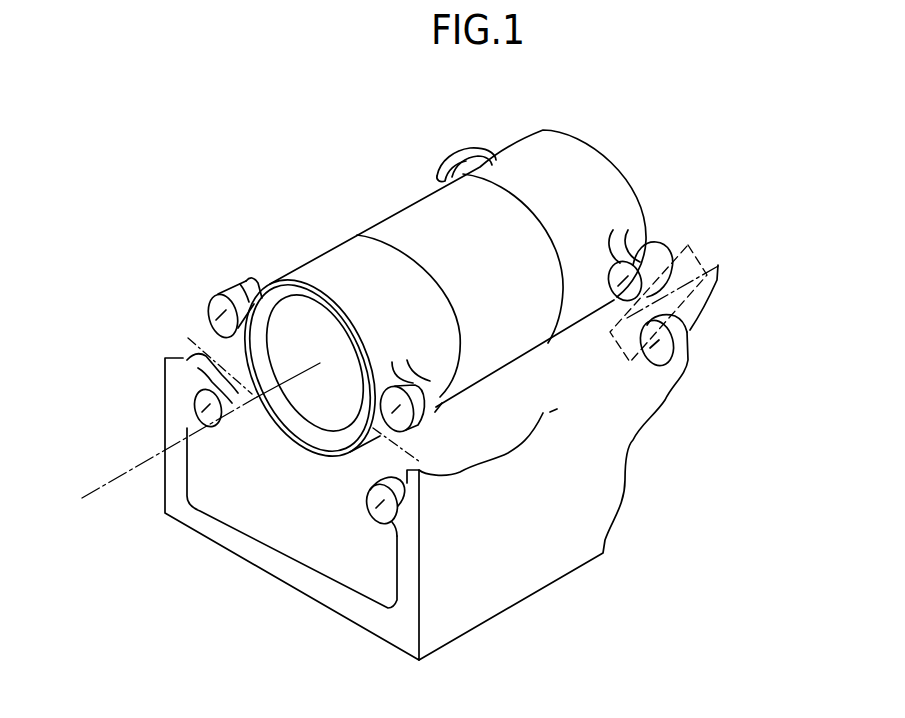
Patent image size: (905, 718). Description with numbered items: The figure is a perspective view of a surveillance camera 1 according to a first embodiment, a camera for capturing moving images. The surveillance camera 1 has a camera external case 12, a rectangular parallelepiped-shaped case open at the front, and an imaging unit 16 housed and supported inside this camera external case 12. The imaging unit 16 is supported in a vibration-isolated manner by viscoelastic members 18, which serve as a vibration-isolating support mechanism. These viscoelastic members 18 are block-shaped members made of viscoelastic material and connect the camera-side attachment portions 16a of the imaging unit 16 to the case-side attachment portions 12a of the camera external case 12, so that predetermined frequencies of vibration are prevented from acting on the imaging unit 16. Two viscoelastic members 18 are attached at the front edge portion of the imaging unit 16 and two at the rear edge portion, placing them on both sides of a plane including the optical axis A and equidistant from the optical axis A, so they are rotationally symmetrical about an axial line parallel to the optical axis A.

The surveillance camera 1 is at (128, 253).
The camera external case 12 is at (542, 542).
The case-side attachment portion 12a is at (193, 412).
The imaging unit 16 is at (590, 183).
The camera-side attachment portion 16a is at (250, 285).
The viscoelastic member 18 is at (480, 150).
The optical axis A is at (102, 490).